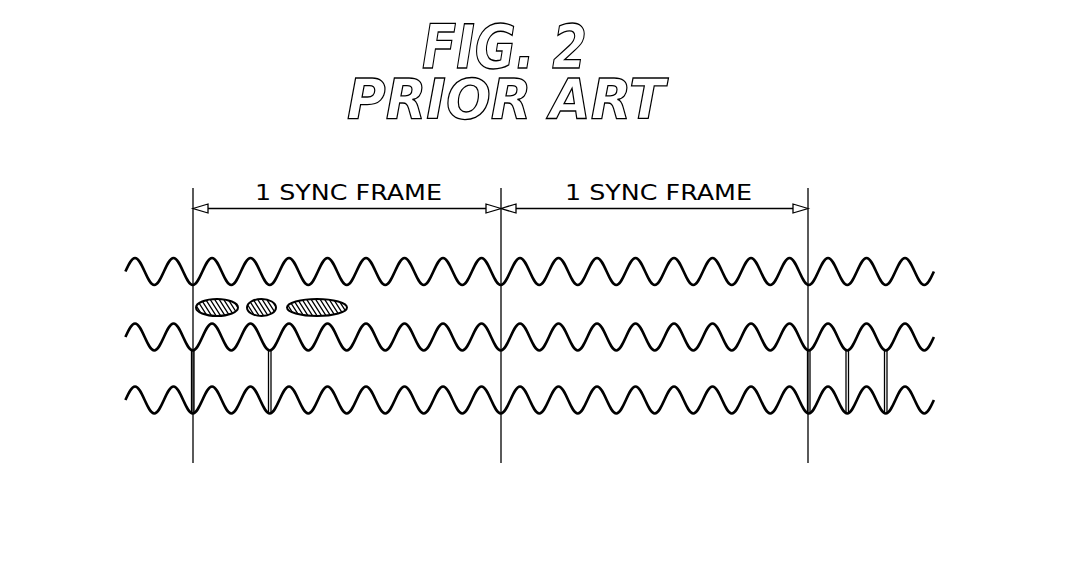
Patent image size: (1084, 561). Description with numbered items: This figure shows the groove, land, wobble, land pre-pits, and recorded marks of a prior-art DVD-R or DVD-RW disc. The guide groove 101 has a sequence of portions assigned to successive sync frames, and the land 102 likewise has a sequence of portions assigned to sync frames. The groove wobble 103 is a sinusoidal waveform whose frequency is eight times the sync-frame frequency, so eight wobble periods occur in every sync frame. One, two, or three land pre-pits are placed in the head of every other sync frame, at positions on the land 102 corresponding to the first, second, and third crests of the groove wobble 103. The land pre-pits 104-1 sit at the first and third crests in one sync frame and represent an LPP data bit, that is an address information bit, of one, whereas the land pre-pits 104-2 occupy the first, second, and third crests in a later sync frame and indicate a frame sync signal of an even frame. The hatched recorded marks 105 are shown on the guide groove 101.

The guide groove 101 is at (148, 306).
The land 102 is at (148, 371).
The groove wobble 103 is at (579, 432).
The land pre-pits 104-1 is at (256, 403).
The land pre-pits 104-2 is at (883, 432).
The recording marks 105 is at (347, 305).